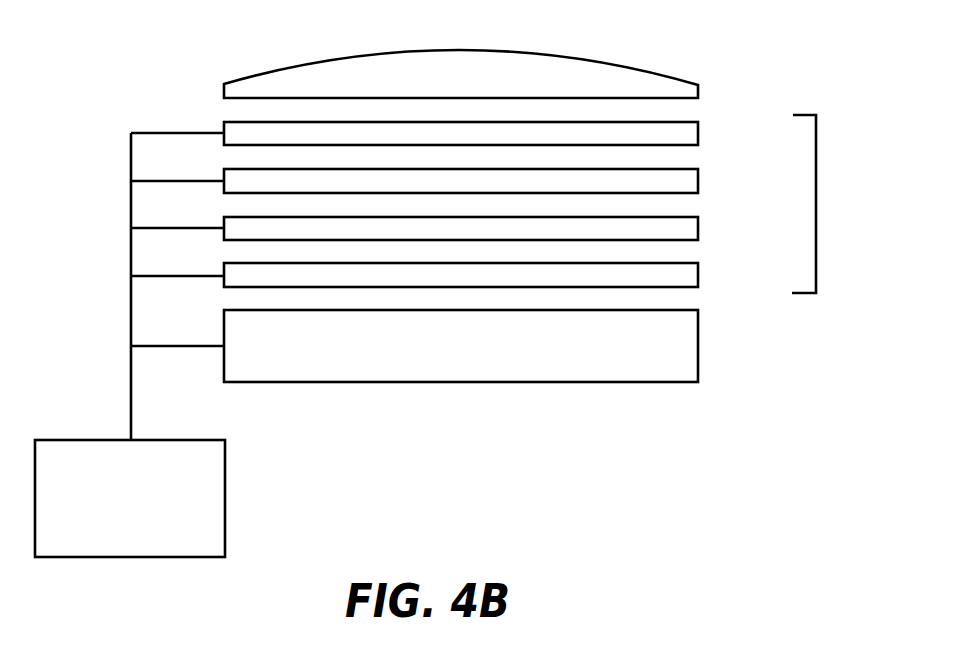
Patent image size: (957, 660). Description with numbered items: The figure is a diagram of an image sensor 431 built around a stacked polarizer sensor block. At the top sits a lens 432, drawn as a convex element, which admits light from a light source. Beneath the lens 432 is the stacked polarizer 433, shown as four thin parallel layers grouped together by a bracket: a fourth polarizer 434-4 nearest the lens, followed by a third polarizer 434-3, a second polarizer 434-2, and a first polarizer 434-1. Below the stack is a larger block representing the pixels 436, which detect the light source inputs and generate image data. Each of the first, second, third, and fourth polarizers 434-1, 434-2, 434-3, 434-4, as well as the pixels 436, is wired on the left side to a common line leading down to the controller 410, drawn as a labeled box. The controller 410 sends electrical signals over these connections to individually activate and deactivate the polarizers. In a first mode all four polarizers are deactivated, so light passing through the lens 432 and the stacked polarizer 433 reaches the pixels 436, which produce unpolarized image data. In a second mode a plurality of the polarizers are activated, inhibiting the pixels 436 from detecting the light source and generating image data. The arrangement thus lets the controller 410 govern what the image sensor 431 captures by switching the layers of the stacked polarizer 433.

The image sensor 431 is at (153, 56).
The lens 432 is at (592, 68).
The stacked polarizer 433 is at (816, 205).
The fourth polarizer 434-4 is at (687, 134).
The third polarizer 434-3 is at (687, 181).
The second polarizer 434-2 is at (687, 229).
The first polarizer 434-1 is at (687, 276).
The pixels 436 is at (685, 345).
The controller 410 is at (213, 500).